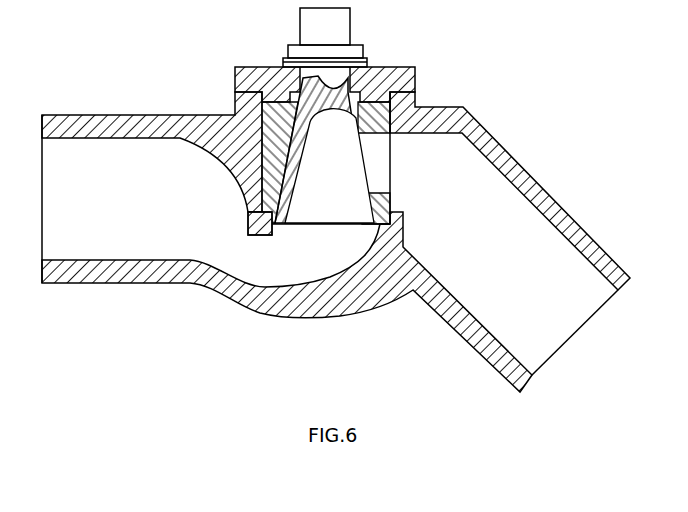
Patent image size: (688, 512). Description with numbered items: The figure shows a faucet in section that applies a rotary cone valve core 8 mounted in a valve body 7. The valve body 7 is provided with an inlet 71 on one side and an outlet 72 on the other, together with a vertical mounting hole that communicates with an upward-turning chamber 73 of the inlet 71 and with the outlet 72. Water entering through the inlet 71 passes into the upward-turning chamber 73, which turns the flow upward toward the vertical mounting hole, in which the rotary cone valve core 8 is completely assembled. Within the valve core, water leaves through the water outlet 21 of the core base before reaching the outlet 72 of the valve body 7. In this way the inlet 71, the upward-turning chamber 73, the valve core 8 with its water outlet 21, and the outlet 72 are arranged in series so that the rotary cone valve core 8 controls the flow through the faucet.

The valve body 7 is at (205, 133).
The rotary cone valve core 8 is at (337, 25).
The water outlet 21 is at (373, 163).
The inlet of the valve body 71 is at (137, 223).
The outlet of the valve body 72 is at (460, 268).
The upward-turning chamber 73 is at (313, 228).